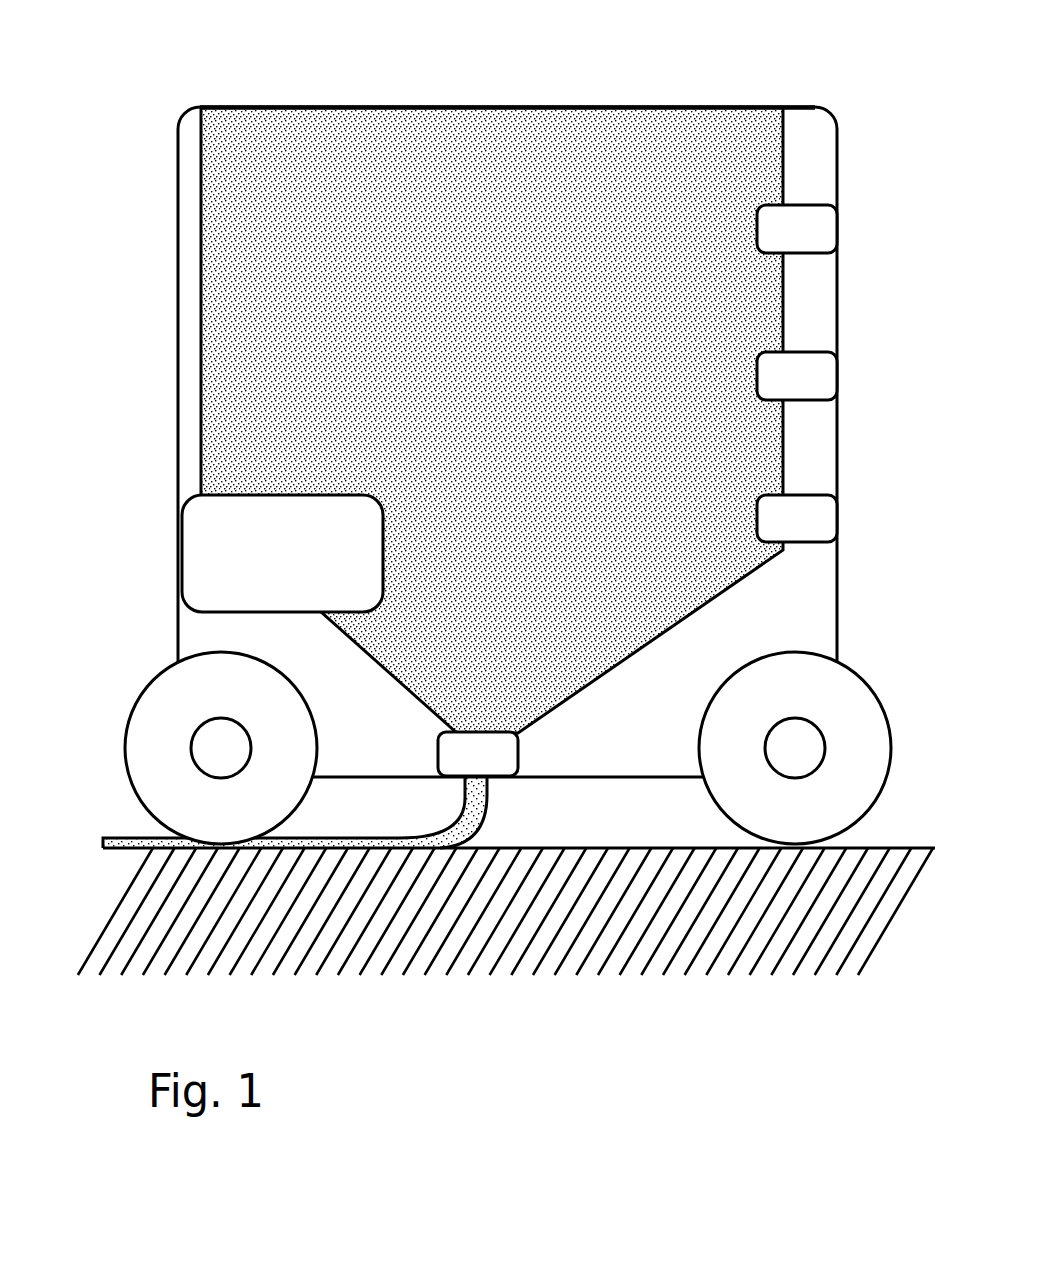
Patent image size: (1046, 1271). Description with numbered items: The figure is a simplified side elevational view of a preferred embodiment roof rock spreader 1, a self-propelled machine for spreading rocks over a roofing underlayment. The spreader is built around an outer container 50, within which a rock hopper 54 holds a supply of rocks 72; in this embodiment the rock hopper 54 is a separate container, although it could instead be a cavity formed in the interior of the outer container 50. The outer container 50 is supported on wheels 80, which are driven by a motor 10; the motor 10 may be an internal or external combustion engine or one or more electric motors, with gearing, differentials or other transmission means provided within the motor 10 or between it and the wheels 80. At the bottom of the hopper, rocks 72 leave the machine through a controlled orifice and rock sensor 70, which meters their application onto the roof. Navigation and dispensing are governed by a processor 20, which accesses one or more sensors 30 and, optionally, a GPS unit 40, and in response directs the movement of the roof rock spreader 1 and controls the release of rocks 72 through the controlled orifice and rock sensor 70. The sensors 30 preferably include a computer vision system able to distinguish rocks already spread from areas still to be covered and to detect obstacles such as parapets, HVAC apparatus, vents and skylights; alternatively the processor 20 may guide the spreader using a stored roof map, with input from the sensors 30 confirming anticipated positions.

The roof rock spreader 1 is at (497, 447).
The motor 10 is at (174, 570).
The processor 20 is at (843, 523).
The sensors 30 is at (845, 380).
The GPS unit 40 is at (843, 232).
The outer container 50 is at (178, 322).
The rock hopper 54 is at (540, 106).
The controlled orifice and rock sensor 70 is at (487, 769).
The rocks 72 is at (417, 129).
The wheels 80 is at (160, 776).